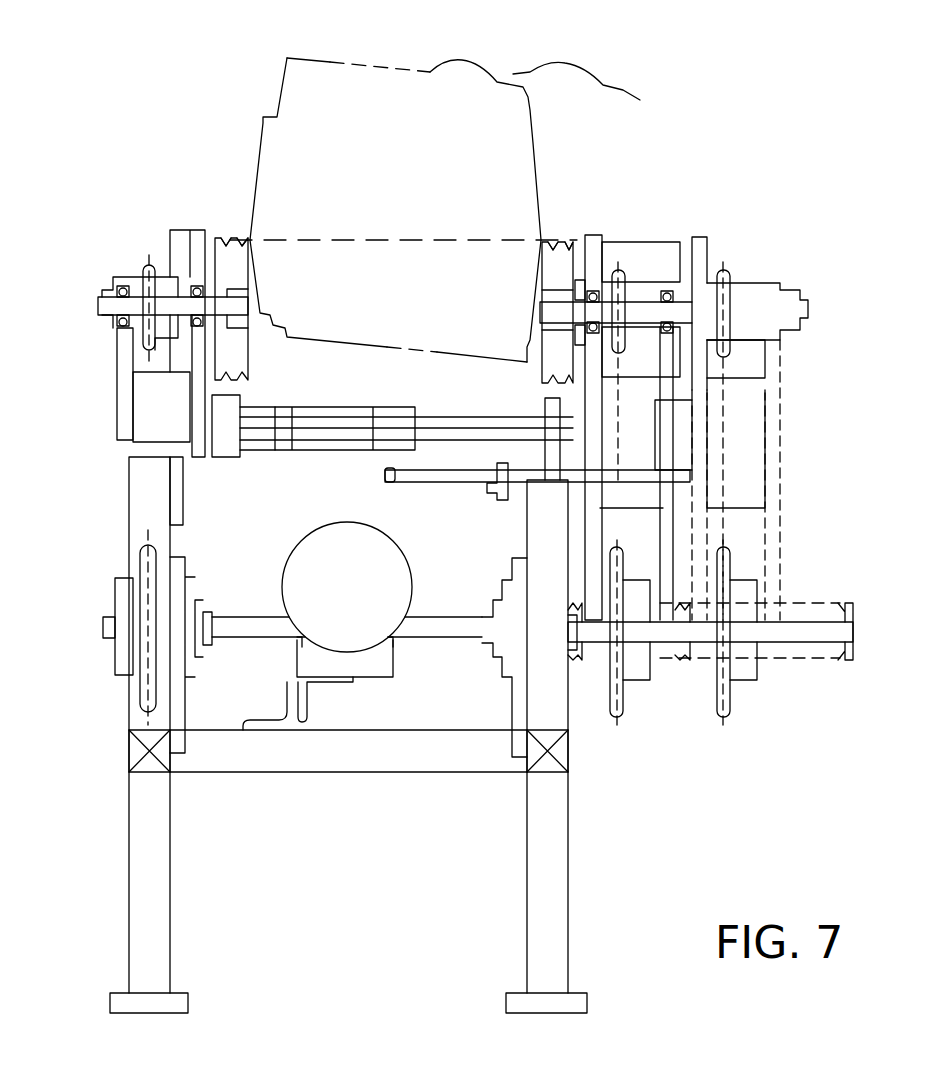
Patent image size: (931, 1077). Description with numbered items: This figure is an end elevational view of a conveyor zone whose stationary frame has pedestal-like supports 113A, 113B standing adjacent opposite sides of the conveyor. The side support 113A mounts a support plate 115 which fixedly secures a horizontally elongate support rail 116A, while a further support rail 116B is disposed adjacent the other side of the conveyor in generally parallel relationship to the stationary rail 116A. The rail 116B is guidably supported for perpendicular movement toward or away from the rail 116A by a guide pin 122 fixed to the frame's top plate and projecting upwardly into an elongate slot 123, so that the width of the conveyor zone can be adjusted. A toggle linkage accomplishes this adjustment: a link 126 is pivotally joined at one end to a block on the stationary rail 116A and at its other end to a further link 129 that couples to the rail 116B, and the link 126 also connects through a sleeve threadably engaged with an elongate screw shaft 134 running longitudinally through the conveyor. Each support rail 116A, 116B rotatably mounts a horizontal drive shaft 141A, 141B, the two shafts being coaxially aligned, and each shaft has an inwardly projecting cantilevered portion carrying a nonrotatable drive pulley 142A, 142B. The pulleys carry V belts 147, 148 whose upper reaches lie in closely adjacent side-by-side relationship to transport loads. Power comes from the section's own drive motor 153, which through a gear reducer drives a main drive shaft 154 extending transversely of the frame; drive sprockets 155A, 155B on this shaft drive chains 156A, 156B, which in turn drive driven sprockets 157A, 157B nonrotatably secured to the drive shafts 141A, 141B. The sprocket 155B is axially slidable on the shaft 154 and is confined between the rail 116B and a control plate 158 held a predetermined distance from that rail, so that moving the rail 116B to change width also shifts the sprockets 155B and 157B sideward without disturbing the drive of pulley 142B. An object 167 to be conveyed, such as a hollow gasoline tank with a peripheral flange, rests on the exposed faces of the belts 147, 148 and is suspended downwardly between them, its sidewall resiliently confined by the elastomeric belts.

The object 167 is at (358, 95).
The support 113A is at (148, 853).
The support 113B is at (557, 862).
The support plate 115 is at (180, 488).
The support rail 116A is at (192, 255).
The support rail 116B is at (638, 365).
The guide pin 122 is at (442, 483).
The elongate slot 123 is at (498, 497).
The link 126 is at (330, 440).
The link 129 is at (490, 432).
The screw shaft 134 is at (278, 425).
The drive shaft 141A is at (105, 310).
The drive shaft 141B is at (680, 310).
The drive pulley 142A is at (245, 345).
The drive pulley 142B is at (543, 350).
The V belt 147 is at (215, 240).
The V belt 148 is at (240, 240).
The drive motor 153 is at (330, 525).
The main drive shaft 154 is at (243, 623).
The drive sprocket 155A is at (143, 690).
The drive sprocket 155B is at (625, 715).
The drive chain 156A is at (148, 418).
The drive chain 156B is at (617, 530).
The driven sprocket 157A is at (145, 272).
The driven sprocket 157B is at (630, 290).
The control plate 158 is at (770, 428).